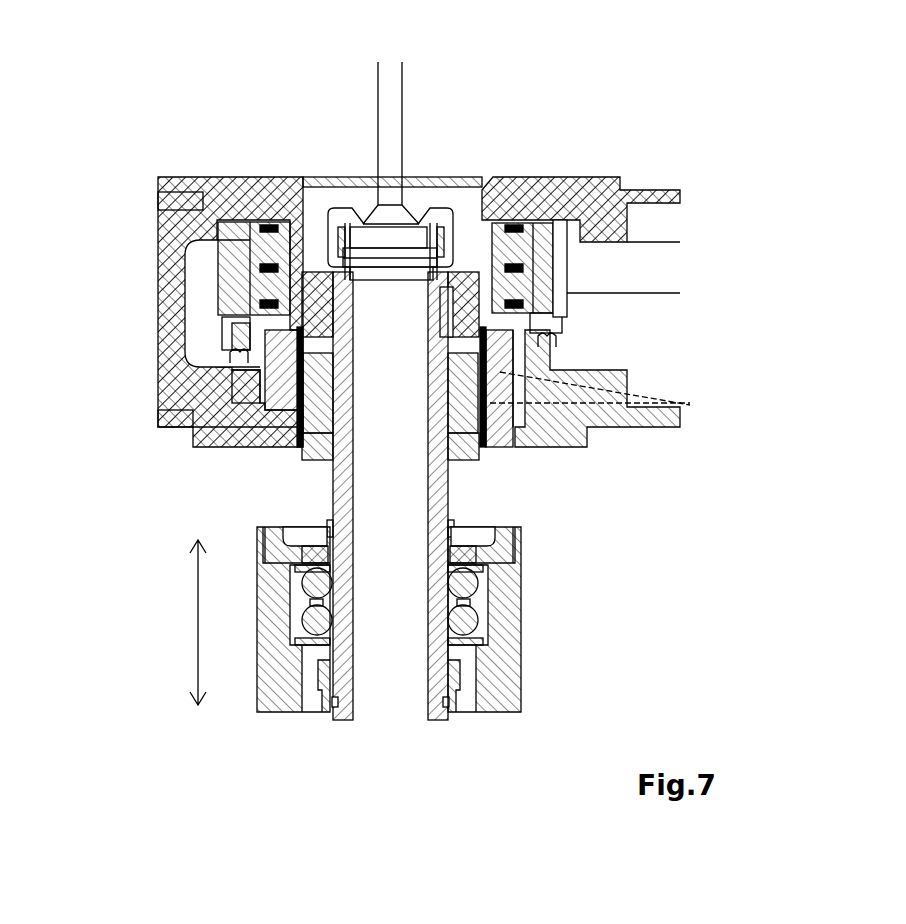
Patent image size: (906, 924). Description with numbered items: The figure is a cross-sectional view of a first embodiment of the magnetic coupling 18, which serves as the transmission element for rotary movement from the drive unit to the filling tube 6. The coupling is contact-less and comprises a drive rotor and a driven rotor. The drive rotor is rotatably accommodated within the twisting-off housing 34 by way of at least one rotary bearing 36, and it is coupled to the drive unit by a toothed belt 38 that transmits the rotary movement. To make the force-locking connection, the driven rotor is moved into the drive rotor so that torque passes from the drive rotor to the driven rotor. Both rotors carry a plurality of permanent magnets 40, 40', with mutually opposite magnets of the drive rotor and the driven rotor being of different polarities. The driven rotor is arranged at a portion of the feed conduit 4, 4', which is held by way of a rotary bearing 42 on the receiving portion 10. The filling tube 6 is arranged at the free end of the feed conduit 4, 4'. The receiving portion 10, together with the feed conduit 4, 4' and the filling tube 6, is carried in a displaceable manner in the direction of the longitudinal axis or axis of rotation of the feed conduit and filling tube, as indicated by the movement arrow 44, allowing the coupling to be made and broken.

The feed conduit 4 is at (260, 553).
The feed conduit 4' is at (320, 553).
The filling tube 6 is at (392, 112).
The receiving portion 10 is at (510, 657).
The magnetic coupling 18 is at (256, 461).
The twisting-off housing 34 is at (173, 373).
The rotary bearing 36 is at (510, 288).
The toothed belt 38 is at (640, 280).
The permanent magnets 40 is at (554, 421).
The permanent magnets 40' is at (540, 437).
The rotary bearing 42 is at (480, 603).
The movement arrow 44 is at (198, 623).